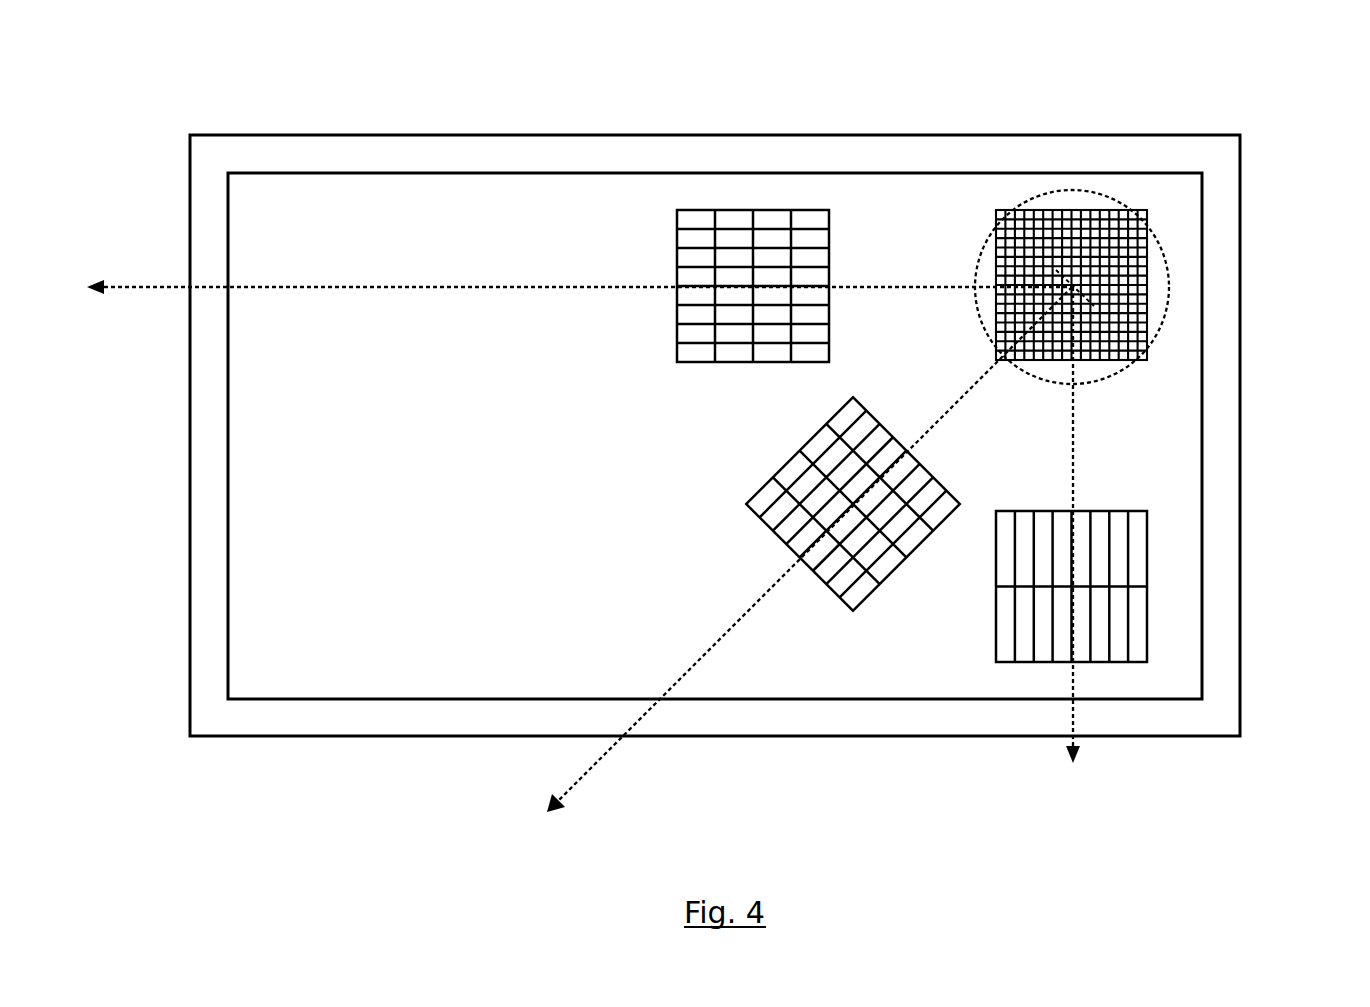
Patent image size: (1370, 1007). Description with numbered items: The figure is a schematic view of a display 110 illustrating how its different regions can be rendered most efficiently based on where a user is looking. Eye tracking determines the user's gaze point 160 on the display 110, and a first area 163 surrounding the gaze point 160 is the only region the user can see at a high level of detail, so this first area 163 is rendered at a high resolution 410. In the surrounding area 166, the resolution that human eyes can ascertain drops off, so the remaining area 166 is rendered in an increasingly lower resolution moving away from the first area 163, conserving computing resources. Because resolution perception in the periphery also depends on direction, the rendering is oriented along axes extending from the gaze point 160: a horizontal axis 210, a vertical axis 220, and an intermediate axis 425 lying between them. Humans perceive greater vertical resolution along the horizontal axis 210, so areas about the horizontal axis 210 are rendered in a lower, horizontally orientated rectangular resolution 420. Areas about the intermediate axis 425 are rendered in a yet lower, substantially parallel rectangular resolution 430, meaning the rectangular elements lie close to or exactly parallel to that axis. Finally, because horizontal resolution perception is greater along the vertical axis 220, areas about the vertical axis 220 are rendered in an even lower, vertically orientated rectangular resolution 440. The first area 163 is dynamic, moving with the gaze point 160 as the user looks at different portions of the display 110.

The display 110 is at (1131, 135).
The surrounding area 166 is at (492, 596).
The gaze point 160 is at (1074, 284).
The first area 163 is at (1167, 315).
The horizontal axis 210 is at (877, 282).
The vertical axis 220 is at (1075, 473).
The high resolution 410 is at (1145, 363).
The horizontally orientated rectangular resolution 420 is at (745, 210).
The diagonal axis 425 is at (737, 622).
The substantially parallel rectangular resolution 430 is at (875, 592).
The vertically orientated rectangular resolution 440 is at (1148, 558).